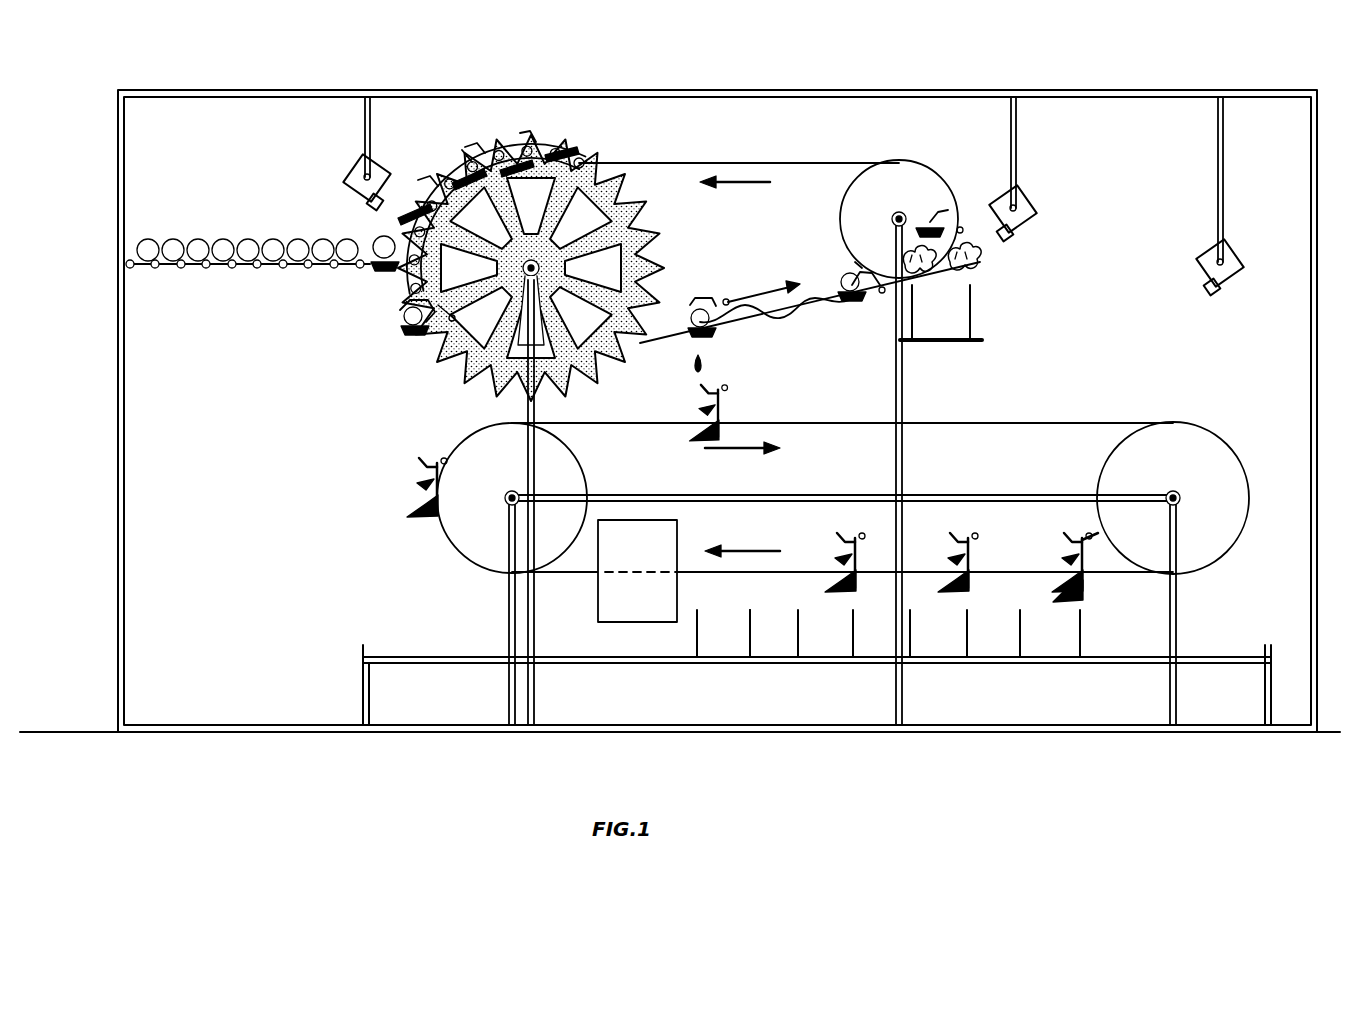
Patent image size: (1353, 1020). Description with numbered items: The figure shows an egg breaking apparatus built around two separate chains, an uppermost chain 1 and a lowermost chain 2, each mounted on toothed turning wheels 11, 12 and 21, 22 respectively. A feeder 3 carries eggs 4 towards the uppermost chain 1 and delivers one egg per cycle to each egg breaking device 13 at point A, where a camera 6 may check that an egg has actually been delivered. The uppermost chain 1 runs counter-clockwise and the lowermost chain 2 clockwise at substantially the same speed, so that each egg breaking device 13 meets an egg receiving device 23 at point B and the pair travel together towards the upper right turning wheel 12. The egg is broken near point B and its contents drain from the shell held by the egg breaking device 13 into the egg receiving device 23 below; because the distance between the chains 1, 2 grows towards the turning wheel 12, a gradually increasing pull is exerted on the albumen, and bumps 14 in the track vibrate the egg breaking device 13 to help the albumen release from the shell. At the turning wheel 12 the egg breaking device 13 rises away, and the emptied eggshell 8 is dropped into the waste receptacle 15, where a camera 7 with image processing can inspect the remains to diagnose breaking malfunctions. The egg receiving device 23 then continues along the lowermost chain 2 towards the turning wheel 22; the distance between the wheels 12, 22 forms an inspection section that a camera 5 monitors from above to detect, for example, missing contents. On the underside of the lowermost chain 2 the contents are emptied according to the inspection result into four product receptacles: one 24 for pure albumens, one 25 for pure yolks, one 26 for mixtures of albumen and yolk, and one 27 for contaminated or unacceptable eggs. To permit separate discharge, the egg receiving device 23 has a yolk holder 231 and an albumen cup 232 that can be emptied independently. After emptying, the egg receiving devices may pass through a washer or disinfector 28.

The uppermost chain 1 is at (810, 163).
The lowermost chain 2 is at (928, 424).
The feeder 3 is at (278, 268).
The eggs 4 is at (245, 250).
The camera 5 is at (1200, 266).
The camera 6 is at (350, 166).
The camera 7 is at (1028, 200).
The emptied eggshell 8 is at (958, 272).
The toothed turning wheel 11 is at (605, 195).
The turning wheel 12 is at (912, 178).
The egg breaking device 13 is at (410, 330).
The bumps 14 is at (790, 305).
The waste receptacle 15 is at (963, 316).
The toothed turning wheel 21 is at (470, 530).
The turning wheel 22 is at (1230, 470).
The egg receiving device 23 is at (412, 502).
The product receptacle 24 is at (1065, 648).
The product receptacle 25 is at (955, 648).
The product receptacle 26 is at (835, 648).
The product receptacle 27 is at (728, 650).
The washer or disinfector 28 is at (640, 610).
The yolk holder 231 is at (1088, 575).
The albumen cup 232 is at (1080, 595).